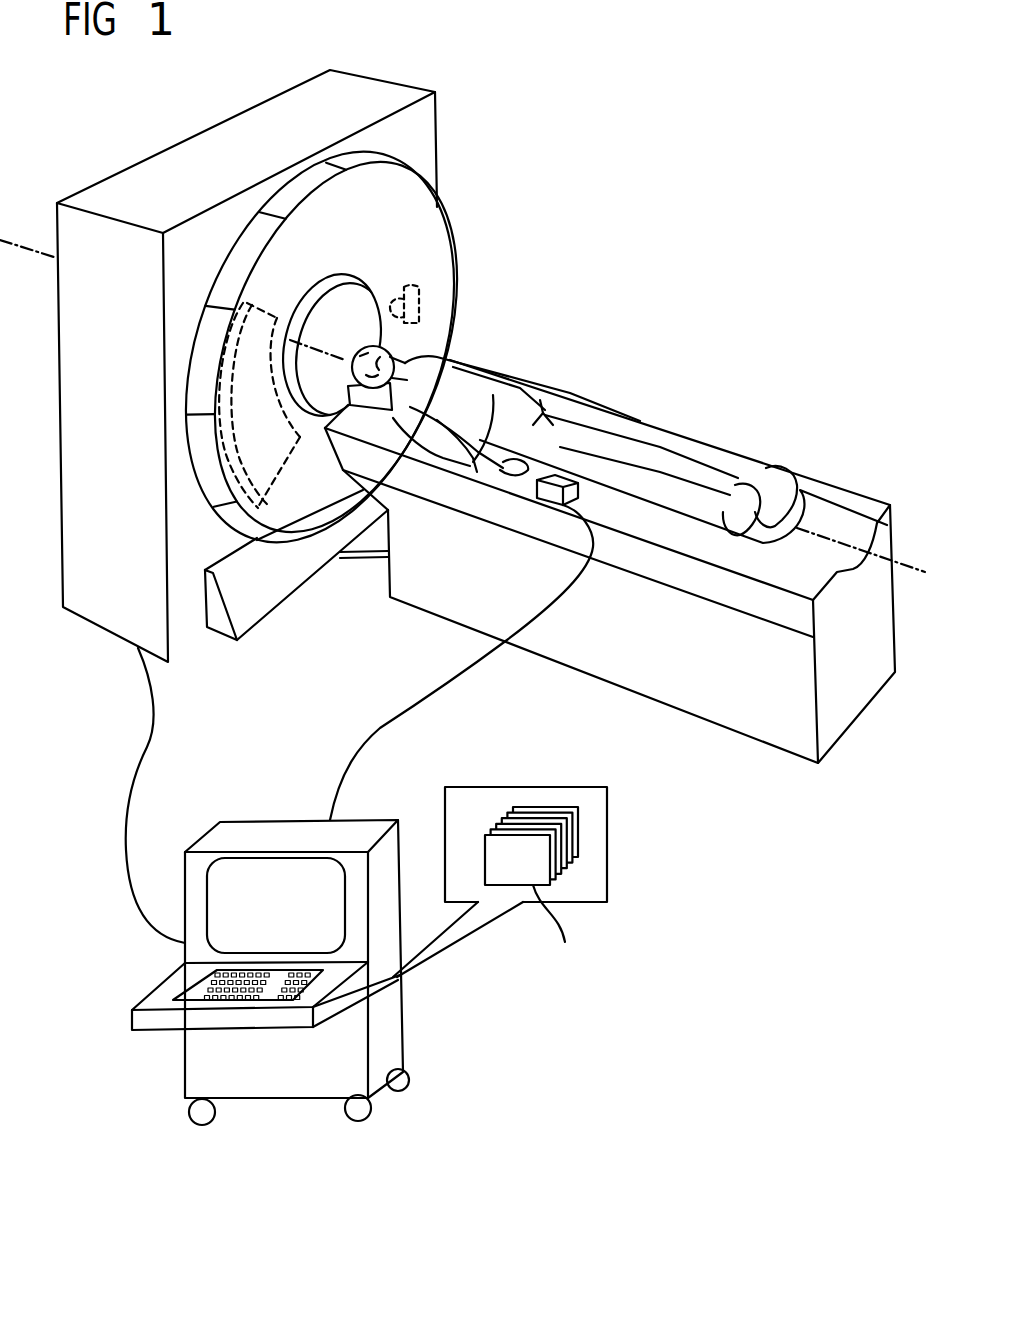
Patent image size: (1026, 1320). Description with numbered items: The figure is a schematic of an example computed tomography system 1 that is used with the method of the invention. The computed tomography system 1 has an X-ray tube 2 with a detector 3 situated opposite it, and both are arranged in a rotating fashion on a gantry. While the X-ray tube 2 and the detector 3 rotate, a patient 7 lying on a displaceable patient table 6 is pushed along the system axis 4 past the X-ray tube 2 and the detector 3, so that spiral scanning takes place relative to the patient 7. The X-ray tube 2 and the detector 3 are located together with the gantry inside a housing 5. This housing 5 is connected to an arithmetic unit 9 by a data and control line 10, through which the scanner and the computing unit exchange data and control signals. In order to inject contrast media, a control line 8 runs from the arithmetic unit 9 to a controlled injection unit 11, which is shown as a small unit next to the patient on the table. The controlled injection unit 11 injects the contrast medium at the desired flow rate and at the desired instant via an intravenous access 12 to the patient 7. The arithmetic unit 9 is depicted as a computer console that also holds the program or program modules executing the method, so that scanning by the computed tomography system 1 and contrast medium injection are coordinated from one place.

The computed tomography system 1 is at (641, 257).
The X-ray tube 2 is at (418, 300).
The detector 3 is at (260, 477).
The system axis 4 is at (917, 567).
The housing 5 is at (95, 592).
The displaceable patient table 6 is at (589, 643).
The patient 7 is at (458, 380).
The control line for the automatic injection apparatus 8 is at (353, 750).
The arithmetic unit 9 is at (387, 1037).
The data and control line 10 is at (142, 748).
The controlled injection unit 11 is at (553, 480).
The intravenous access 12 is at (472, 477).